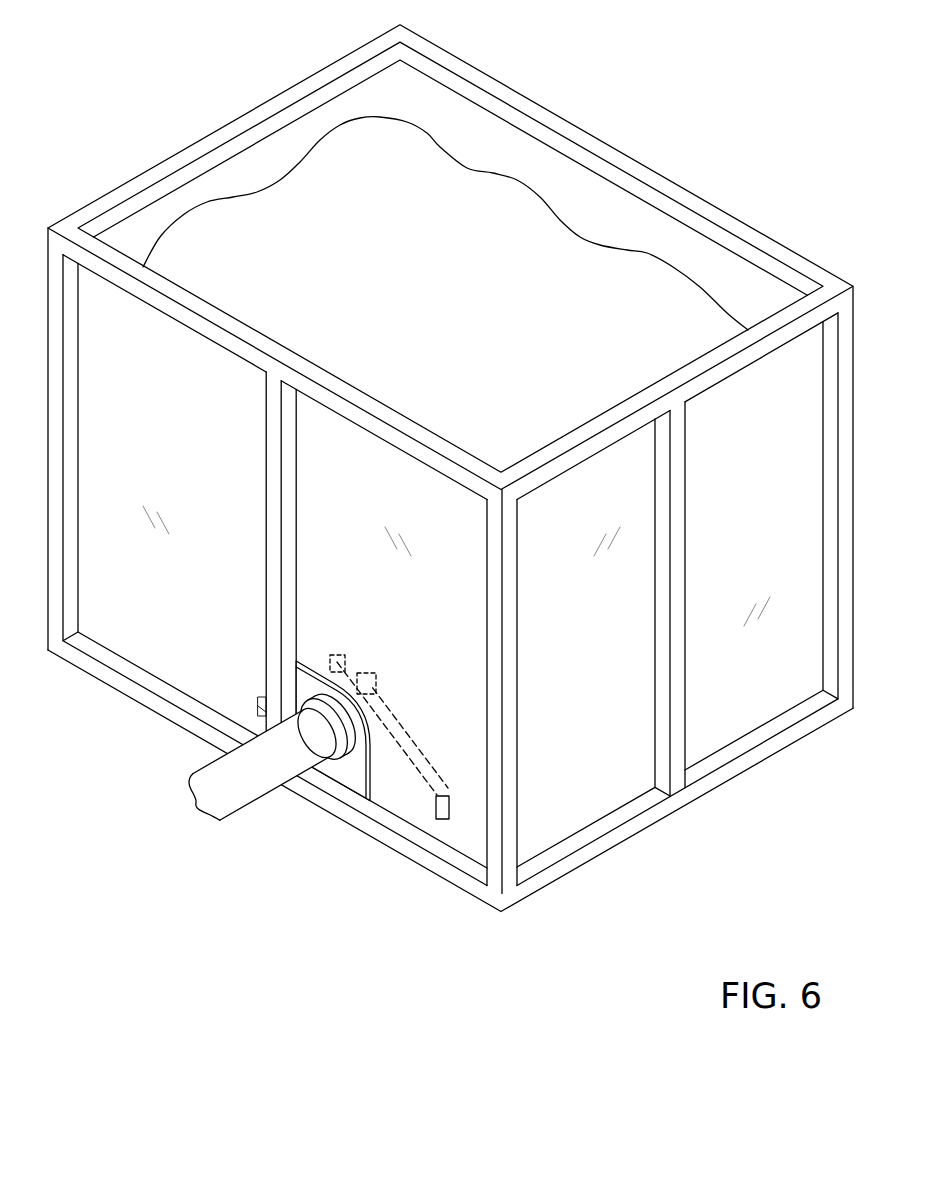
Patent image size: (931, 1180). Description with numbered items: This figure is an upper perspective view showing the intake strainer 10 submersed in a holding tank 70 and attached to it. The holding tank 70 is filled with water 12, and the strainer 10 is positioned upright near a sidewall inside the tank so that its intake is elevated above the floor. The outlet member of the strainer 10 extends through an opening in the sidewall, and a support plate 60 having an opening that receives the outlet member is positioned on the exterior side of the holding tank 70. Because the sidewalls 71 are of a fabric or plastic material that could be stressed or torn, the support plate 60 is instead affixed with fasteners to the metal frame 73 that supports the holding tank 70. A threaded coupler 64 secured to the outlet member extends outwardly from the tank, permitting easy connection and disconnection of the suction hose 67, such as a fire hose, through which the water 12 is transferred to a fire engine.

The intake strainer 10 is at (413, 736).
The water 12 is at (510, 250).
The support plate 60 is at (357, 772).
The threaded coupler 64 is at (335, 755).
The suction hose 67 is at (212, 768).
The holding tank 70 is at (727, 658).
The sidewalls 71 is at (468, 815).
The frame 73 is at (265, 634).